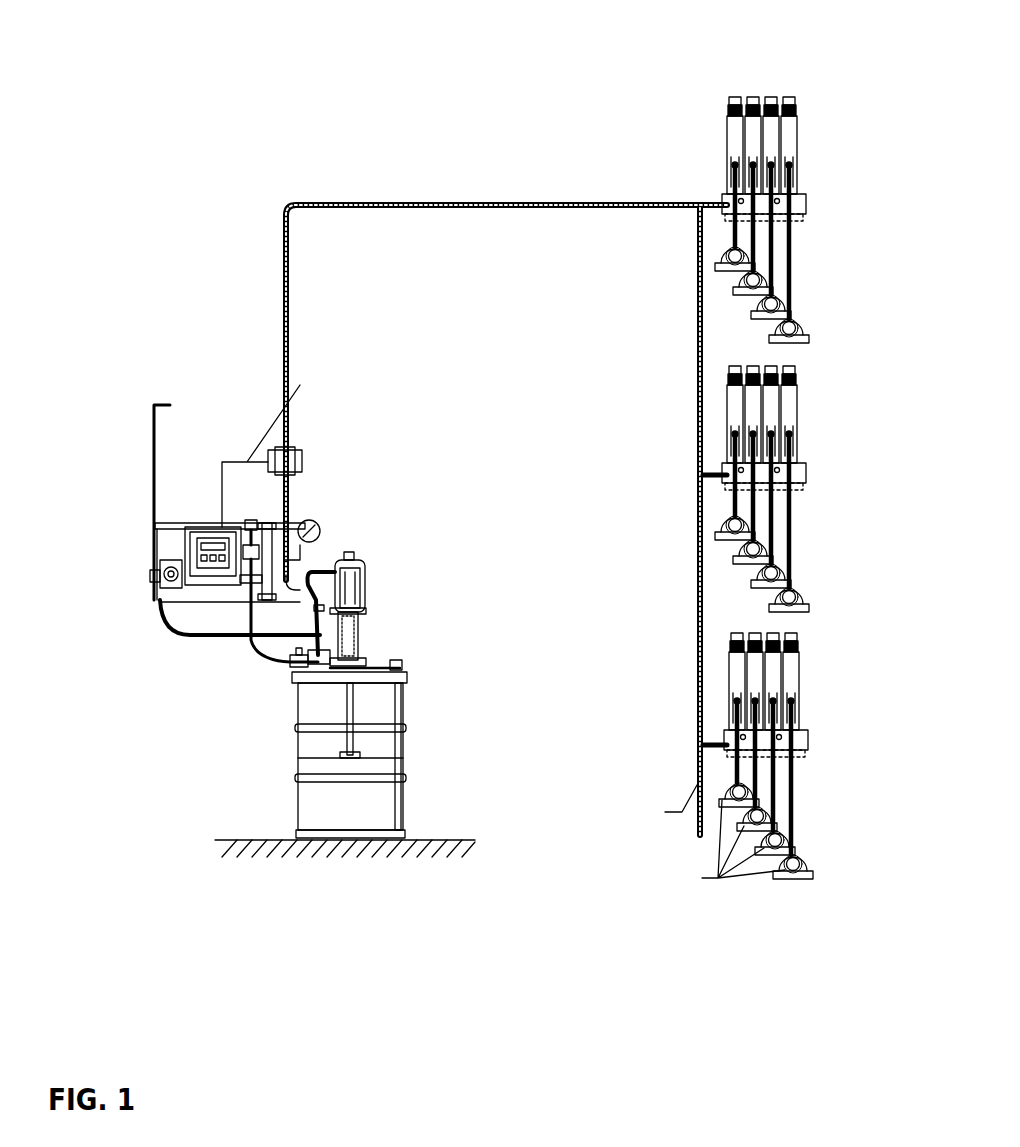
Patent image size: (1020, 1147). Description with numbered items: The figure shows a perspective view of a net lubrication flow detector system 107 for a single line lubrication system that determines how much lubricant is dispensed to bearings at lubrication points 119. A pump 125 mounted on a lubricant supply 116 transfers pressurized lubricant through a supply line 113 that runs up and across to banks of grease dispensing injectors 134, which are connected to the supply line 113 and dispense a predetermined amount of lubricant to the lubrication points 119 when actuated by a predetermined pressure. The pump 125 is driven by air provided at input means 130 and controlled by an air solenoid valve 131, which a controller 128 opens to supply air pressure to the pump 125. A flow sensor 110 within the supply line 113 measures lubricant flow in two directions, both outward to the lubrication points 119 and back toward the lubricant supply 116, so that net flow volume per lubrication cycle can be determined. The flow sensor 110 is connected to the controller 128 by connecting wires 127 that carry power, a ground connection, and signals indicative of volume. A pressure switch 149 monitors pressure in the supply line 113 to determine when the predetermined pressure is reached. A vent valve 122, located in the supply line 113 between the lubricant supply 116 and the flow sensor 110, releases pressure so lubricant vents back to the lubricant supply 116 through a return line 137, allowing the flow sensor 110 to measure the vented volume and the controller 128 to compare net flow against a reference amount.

The net lubrication flow detector system 107 is at (226, 44).
The supply line 113 is at (434, 128).
The grease dispensing injectors 134 is at (891, 78).
The lubrication points 119 is at (900, 270).
The input means 130 is at (208, 483).
The controller 128 is at (83, 427).
The air solenoid valve 131 is at (158, 620).
The connecting wires 127 is at (444, 428).
The flow sensor 110 is at (433, 464).
The pressure switch 149 is at (448, 506).
The pump 125 is at (468, 556).
The return line 137 is at (506, 651).
The vent valve 122 is at (223, 700).
The lubricant supply 116 is at (434, 758).